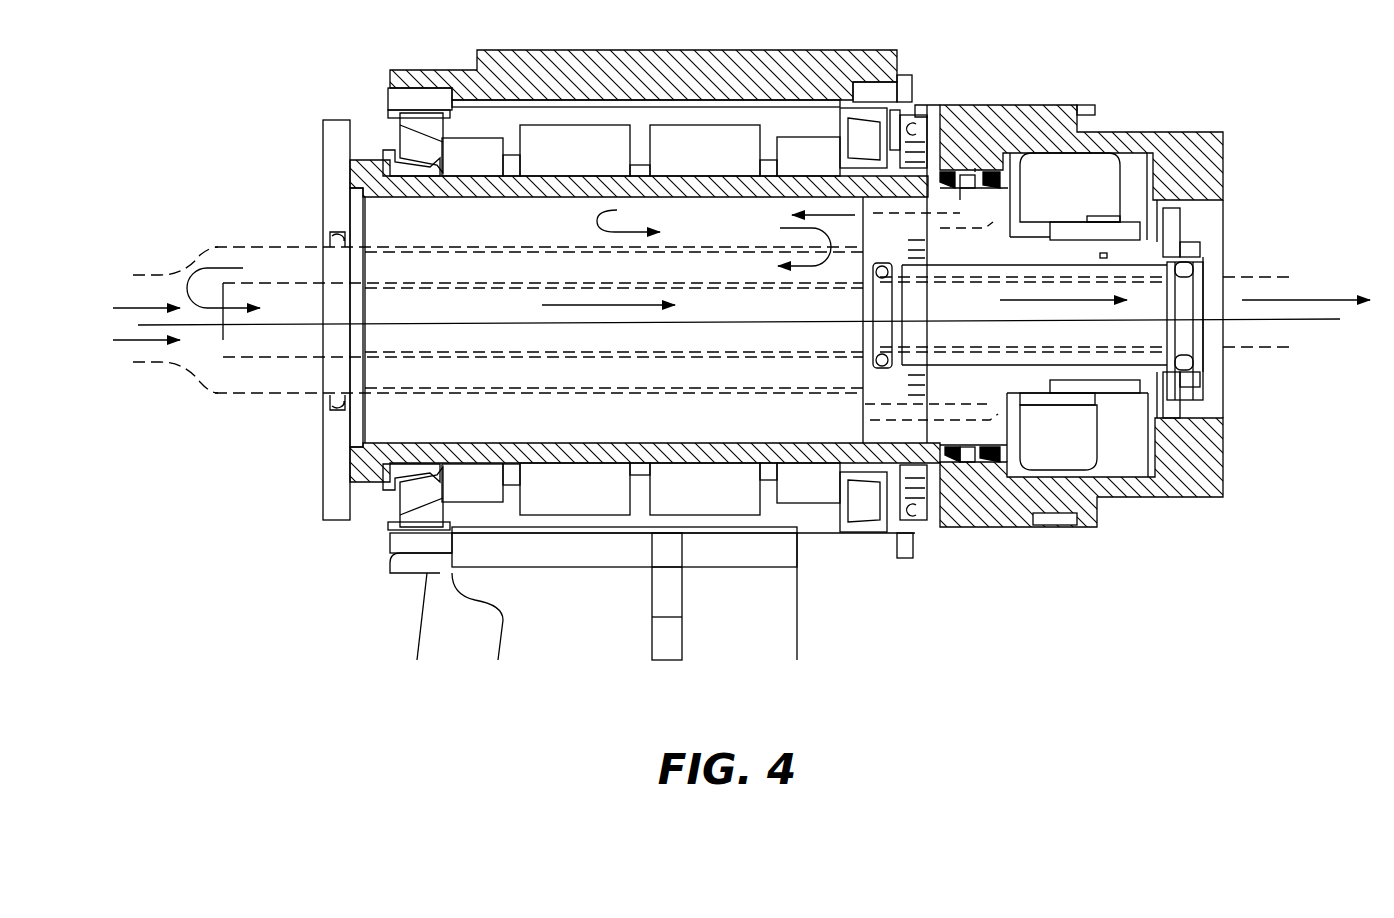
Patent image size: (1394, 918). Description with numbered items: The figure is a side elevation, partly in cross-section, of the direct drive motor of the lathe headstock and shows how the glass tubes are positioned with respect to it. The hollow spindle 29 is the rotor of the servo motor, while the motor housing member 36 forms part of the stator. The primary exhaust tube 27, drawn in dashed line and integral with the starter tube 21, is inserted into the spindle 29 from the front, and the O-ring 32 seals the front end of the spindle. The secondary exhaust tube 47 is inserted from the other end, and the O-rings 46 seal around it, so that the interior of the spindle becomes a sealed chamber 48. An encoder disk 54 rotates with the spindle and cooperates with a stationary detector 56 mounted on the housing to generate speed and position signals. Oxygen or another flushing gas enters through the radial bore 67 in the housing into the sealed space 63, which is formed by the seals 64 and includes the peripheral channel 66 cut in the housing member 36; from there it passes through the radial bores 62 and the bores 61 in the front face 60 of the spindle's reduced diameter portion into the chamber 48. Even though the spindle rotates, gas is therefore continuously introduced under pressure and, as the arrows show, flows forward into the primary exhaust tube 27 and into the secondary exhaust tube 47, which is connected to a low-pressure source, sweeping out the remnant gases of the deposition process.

The starter tube 21 is at (143, 273).
The primary exhaust tube 27 is at (233, 245).
The hollow spindle 29 is at (373, 462).
The O-ring sealing member 32 is at (330, 232).
The motor housing member 36 is at (1060, 102).
The O-ring sealing members 46 is at (872, 277).
The secondary exhaust tube 47 is at (250, 362).
The sealed chamber 48 is at (511, 433).
The encoder disk 54 is at (1182, 218).
The stationary detector 56 is at (1217, 200).
The front face 60 is at (863, 383).
The bores 61 is at (888, 218).
The radial bores 62 is at (973, 208).
The sealed space 63 is at (963, 168).
The seals 64 is at (945, 167).
The peripheral channel 66 is at (990, 187).
The radial bore 67 is at (983, 172).